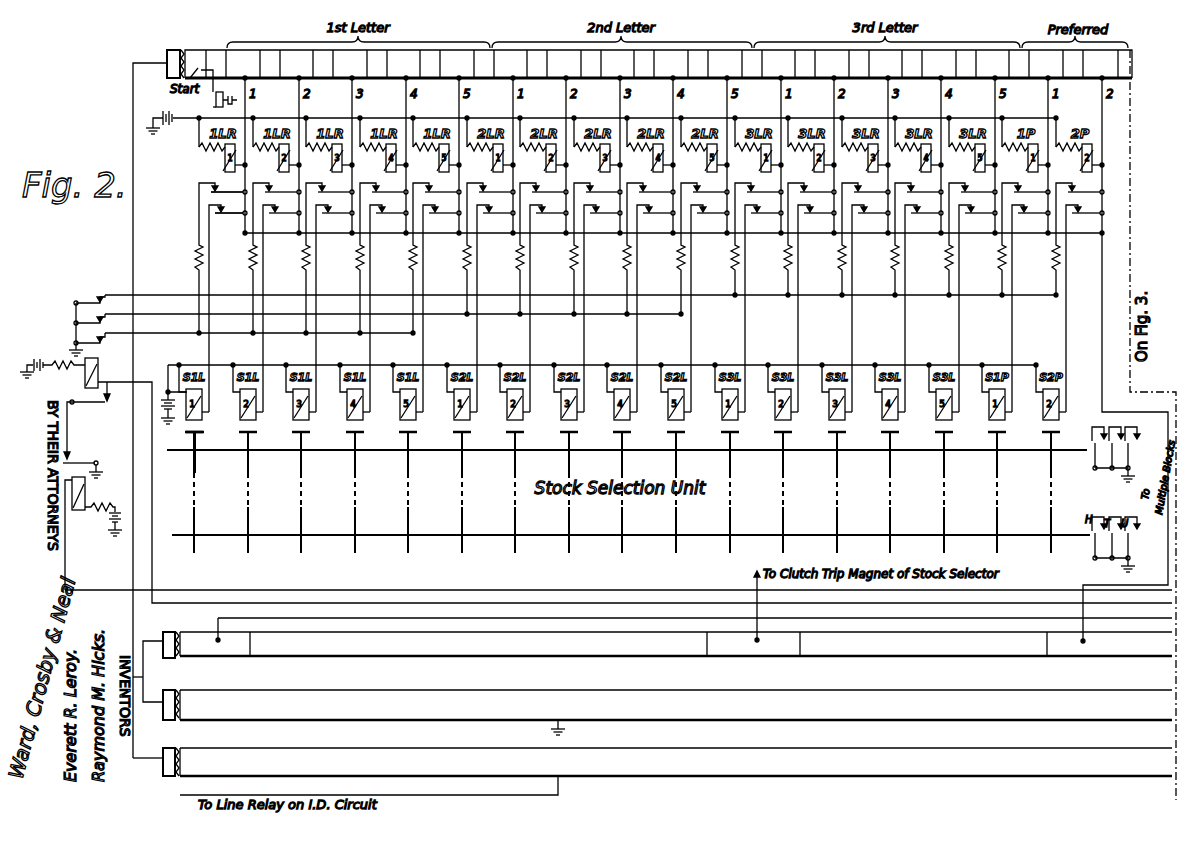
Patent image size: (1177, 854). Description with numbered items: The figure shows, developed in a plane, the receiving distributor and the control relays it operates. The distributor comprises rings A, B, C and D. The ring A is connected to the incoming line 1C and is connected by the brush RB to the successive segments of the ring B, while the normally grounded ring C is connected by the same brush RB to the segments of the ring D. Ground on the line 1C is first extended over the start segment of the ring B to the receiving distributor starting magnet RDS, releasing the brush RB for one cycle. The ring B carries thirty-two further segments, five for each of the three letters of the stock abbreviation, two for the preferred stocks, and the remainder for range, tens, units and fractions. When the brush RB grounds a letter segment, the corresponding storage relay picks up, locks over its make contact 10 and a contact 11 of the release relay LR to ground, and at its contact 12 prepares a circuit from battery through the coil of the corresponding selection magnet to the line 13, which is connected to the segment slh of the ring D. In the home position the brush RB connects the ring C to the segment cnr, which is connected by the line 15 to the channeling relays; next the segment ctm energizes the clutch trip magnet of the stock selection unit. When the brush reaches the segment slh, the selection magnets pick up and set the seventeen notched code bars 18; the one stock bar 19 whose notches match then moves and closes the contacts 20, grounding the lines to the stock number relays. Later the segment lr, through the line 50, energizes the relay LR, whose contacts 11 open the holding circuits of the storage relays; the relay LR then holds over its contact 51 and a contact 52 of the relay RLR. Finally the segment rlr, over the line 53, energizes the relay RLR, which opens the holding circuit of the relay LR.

The ring B is at (200, 50).
The make contact 10 is at (224, 193).
The contact of release relay LR 11 is at (92, 309).
The contact of relay 1LR 12 is at (222, 214).
The line 13 is at (266, 234).
The line 15 is at (410, 619).
The notched code bars 18 is at (199, 438).
The stock bars 19 is at (1005, 451).
The contacts 20 is at (1094, 468).
The line 50 is at (140, 378).
The contact of relay LR 51 is at (96, 404).
The contact of relay RLR 52 is at (78, 462).
The line 53 is at (85, 589).
The incoming line 1C is at (330, 795).
The receiving distributor starting magnet RDS is at (211, 101).
The release relay LR is at (59, 373).
The relay RLR is at (93, 533).
The brush RB is at (143, 677).
The ring A is at (210, 745).
The ring C is at (212, 687).
The ring D is at (210, 631).
The segment chr cnr is at (227, 644).
The segment ctm is at (753, 644).
The segment slh is at (1087, 644).